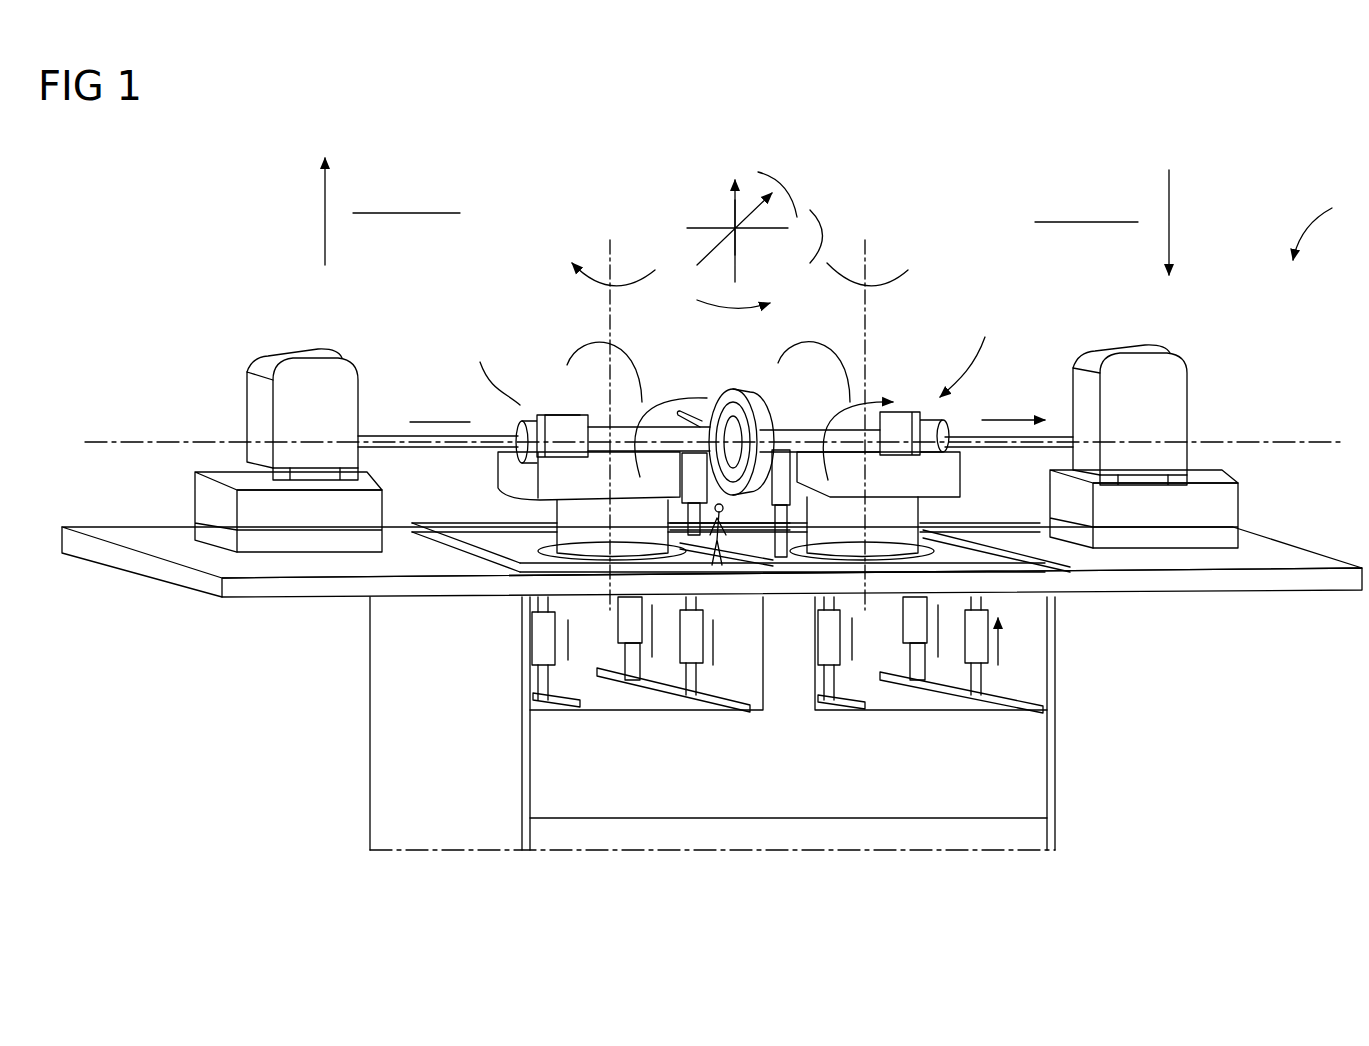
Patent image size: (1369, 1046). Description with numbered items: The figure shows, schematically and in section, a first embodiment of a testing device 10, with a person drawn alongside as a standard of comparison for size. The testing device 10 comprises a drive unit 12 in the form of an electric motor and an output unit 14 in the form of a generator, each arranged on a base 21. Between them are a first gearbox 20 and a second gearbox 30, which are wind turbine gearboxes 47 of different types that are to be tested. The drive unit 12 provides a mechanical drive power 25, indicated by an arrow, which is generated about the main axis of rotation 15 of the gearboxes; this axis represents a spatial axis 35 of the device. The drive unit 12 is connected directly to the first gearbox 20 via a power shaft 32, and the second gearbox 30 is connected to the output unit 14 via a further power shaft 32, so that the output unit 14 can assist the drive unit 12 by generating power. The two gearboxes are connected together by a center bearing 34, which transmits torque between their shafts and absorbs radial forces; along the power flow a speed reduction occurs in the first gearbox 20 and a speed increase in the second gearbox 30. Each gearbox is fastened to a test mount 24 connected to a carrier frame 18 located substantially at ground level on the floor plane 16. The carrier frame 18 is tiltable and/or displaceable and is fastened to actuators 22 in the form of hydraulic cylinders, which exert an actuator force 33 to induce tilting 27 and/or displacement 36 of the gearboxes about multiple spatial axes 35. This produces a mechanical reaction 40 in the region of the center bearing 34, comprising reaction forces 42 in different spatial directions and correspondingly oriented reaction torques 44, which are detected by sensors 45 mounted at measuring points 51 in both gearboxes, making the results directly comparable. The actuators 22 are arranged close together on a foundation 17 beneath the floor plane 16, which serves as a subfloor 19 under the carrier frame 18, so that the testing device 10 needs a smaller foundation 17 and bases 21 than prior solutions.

The testing device 10 is at (1329, 226).
The drive unit 12 is at (255, 405).
The output unit 14 is at (1178, 400).
The main axis of rotation 15 is at (132, 443).
The floor plane 16 is at (258, 597).
The foundation 17 is at (1050, 768).
The carrier frame 18 is at (520, 560).
The subfloor 19 is at (720, 710).
The first gearbox 20 is at (560, 412).
The base 21 is at (200, 502).
The actuator 22 is at (682, 525).
The test mount 24 is at (560, 510).
The mechanical drive power 25 is at (432, 420).
The tilting 27 is at (626, 285).
The second gearbox 30 is at (890, 410).
The power shaft 32 is at (380, 430).
The actuator force 33 is at (568, 692).
The center bearing 34 is at (742, 395).
The spatial axis 35 is at (612, 250).
The displacement 36 is at (322, 215).
The mechanical reaction 40 is at (735, 182).
The reaction forces 42 is at (725, 205).
The reaction torques 44 is at (762, 172).
The sensors 45 is at (548, 415).
The wind turbine gearboxes 47 is at (726, 355).
The measuring points 51 is at (530, 320).